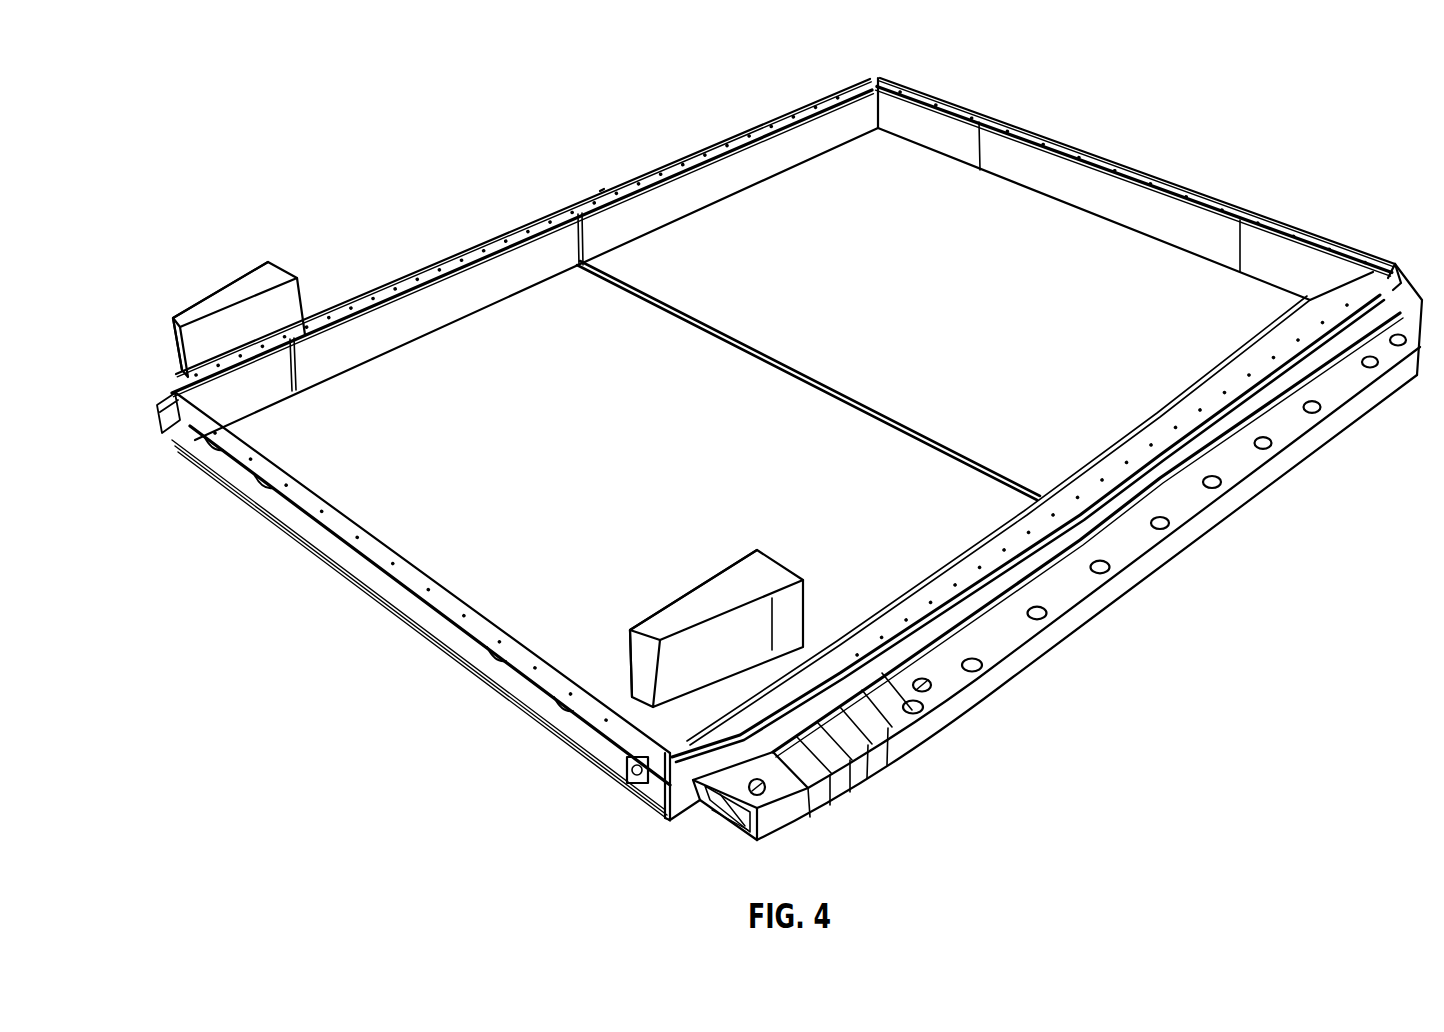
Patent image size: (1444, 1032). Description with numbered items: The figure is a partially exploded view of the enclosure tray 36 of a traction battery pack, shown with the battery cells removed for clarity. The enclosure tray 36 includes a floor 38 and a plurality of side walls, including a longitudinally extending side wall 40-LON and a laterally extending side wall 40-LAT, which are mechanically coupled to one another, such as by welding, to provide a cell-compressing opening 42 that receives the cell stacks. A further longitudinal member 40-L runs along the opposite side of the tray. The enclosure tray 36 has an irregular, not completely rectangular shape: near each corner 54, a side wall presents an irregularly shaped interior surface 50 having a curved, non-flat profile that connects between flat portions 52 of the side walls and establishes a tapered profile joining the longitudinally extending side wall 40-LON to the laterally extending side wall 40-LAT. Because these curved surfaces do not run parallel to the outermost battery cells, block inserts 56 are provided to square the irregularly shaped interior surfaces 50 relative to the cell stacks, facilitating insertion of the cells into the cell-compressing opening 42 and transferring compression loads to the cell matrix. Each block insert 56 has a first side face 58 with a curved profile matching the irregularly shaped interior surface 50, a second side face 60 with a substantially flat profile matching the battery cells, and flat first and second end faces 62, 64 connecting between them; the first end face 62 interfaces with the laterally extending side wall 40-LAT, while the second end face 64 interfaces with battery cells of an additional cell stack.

The enclosure tray 36 is at (750, 426).
The floor 38 is at (886, 232).
The longitudinally extending side wall 40-LON is at (700, 136).
The laterally extending side wall 40-LAT is at (1044, 128).
The longitudinal side beam 40-L is at (1124, 494).
The cell-compressing opening 42 is at (606, 186).
The irregularly shaped interior surface 50 is at (250, 398).
The flat portions 52 is at (496, 280).
The corner 54 is at (152, 431).
The block insert 56 is at (474, 497).
The first side face 58 is at (232, 290).
The second side face 60 is at (262, 322).
The first end face 62 is at (180, 345).
The second end face 64 is at (299, 275).